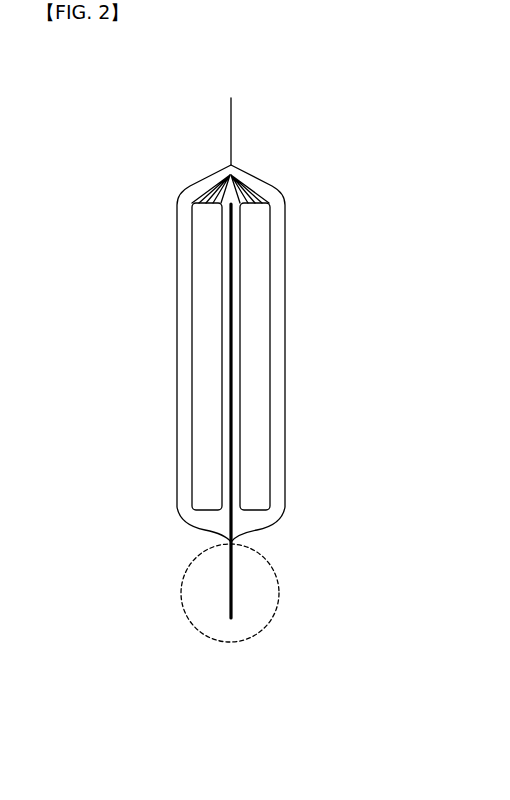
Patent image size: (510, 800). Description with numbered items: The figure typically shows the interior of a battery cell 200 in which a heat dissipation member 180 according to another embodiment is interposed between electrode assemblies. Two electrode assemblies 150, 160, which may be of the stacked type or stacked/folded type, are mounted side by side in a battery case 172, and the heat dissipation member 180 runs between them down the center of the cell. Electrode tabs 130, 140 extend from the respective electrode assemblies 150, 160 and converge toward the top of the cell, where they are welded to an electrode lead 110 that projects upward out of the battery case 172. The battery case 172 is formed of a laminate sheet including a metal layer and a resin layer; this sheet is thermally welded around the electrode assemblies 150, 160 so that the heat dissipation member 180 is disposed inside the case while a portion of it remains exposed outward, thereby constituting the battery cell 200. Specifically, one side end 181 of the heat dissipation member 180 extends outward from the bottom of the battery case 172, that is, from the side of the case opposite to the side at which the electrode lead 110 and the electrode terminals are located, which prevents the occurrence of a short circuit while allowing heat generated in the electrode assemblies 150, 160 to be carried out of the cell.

The battery cell 200 is at (68, 105).
The electrode lead 110 is at (231, 131).
The electrode tab 130 is at (208, 190).
The electrode tab 140 is at (253, 193).
The electrode assembly 150 is at (203, 349).
The electrode assembly 160 is at (260, 372).
The battery case 172 is at (285, 437).
The heat dissipation member 180 is at (233, 277).
The side end 181 is at (232, 603).